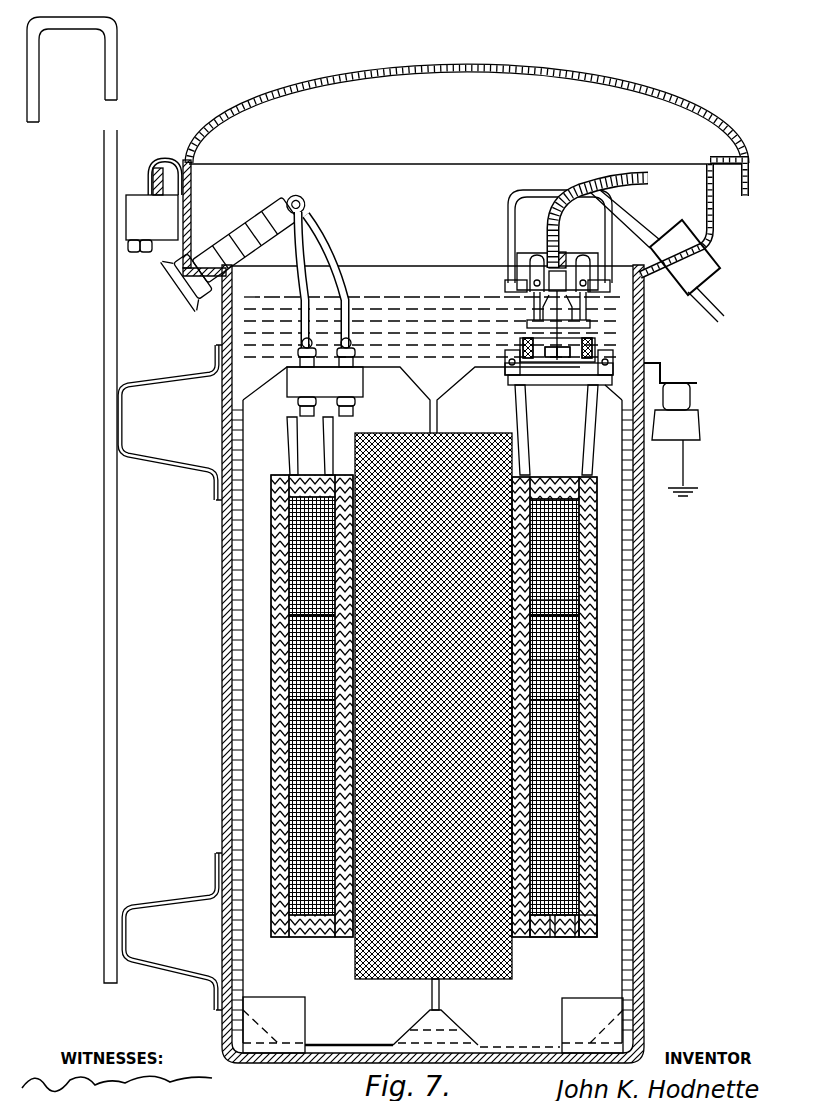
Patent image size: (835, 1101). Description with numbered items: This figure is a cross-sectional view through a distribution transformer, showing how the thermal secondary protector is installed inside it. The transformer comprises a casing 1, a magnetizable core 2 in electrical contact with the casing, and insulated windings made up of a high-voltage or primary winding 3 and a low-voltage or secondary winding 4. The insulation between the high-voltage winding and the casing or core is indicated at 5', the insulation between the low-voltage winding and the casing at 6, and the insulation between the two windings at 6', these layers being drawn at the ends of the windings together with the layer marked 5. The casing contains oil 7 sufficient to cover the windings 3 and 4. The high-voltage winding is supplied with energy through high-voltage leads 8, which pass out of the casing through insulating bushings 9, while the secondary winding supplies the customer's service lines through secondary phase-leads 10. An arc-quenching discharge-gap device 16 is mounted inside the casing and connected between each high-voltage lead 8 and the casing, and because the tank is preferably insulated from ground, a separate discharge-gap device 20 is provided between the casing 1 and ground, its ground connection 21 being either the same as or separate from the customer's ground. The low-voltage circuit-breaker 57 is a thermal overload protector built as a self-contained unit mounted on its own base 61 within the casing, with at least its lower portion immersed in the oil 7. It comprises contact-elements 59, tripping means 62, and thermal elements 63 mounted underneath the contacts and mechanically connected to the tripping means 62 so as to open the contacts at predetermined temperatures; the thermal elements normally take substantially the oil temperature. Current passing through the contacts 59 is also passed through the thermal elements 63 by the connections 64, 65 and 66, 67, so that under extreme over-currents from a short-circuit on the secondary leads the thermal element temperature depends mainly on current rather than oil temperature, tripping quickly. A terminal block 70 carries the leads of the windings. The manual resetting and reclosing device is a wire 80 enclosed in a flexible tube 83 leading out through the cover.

The casing 1 is at (645, 576).
The magnetizable core 2 is at (342, 580).
The high-voltage or primary winding 3 is at (575, 527).
The low-voltage or secondary winding 4 is at (590, 650).
The coil layer 5 is at (402, 723).
The insulation between high-voltage winding and casing or core 5' is at (569, 943).
The insulation between low-voltage winding and casing 6 is at (592, 942).
The insulation between the two windings 6' is at (546, 942).
The oil 7 is at (385, 297).
The high-voltage leads 8 is at (320, 258).
The insulating bushings 9 is at (238, 213).
The secondary phase-leads 10 is at (599, 199).
The arc-quenching discharge-gap device 16 is at (187, 233).
The discharge-gap device 20 is at (688, 398).
The ground connection 21 is at (688, 487).
The low-voltage circuit-breaker 57 is at (545, 280).
The contact-elements 59 is at (566, 281).
The base 61 is at (504, 285).
The tripping means 62 is at (585, 282).
The thermal element 63 is at (583, 338).
The connection 64 is at (552, 357).
The connection 65 is at (543, 355).
The connection 66 is at (582, 358).
The connection 67 is at (590, 345).
The terminal block 70 is at (355, 383).
The wire 80 is at (565, 258).
The flexible tube 83 is at (554, 205).